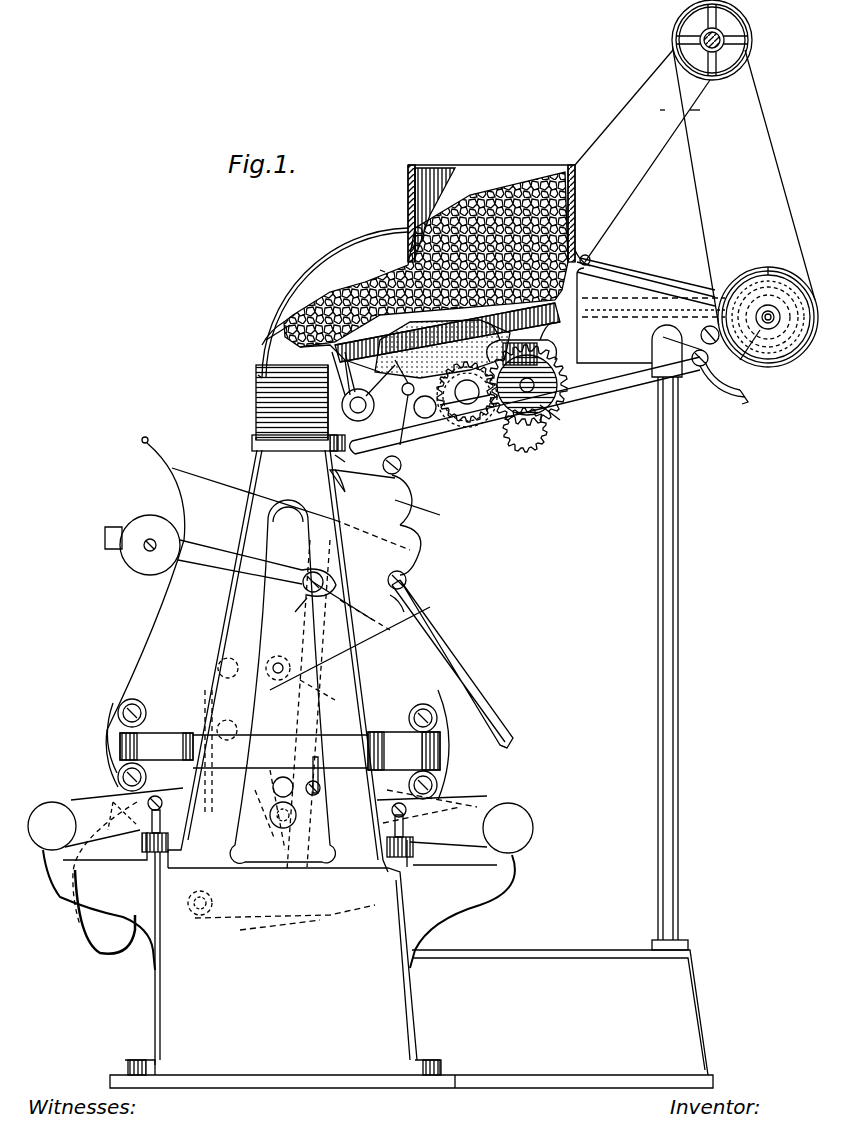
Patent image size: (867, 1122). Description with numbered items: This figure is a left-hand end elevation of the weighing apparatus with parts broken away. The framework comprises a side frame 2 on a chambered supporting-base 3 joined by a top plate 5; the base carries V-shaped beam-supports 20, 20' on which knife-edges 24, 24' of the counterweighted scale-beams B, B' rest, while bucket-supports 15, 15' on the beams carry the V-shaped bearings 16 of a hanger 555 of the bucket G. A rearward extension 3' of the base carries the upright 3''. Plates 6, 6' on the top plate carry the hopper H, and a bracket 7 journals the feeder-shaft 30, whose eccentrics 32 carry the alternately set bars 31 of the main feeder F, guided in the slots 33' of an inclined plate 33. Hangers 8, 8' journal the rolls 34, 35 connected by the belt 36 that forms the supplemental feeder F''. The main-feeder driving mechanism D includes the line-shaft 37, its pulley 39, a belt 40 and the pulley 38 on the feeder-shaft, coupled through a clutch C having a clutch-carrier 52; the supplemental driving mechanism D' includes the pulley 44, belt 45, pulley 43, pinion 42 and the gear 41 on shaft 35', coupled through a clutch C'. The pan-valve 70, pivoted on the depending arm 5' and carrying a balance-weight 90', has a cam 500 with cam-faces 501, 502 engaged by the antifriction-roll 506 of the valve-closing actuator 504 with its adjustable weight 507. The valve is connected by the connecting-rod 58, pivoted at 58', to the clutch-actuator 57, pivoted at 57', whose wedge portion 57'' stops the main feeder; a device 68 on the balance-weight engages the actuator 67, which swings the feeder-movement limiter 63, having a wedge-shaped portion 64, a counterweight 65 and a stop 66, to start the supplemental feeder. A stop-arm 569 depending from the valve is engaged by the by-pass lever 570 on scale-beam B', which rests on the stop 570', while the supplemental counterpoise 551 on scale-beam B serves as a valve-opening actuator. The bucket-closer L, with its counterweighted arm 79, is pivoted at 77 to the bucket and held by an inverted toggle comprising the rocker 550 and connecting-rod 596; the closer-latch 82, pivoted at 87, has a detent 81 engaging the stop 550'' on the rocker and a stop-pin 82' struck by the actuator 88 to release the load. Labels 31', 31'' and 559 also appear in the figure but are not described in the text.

The line-shaft 37 is at (735, 22).
The pulley or band-wheel 44 is at (675, 50).
The belt 45 is at (648, 172).
The pulley or belt-wheel 39 is at (745, 60).
The belt 40 is at (705, 152).
The driving mechanism for the main feeder D is at (719, 163).
The driving mechanism for the supplemental feeder D' is at (652, 123).
The supply device or hopper H is at (490, 165).
The rearwardly-extending plate 6' is at (335, 296).
The main feeder F is at (376, 257).
The rearwardly-extending plate 6 is at (265, 344).
The bars 31 is at (517, 311).
The actuator 67 is at (320, 358).
The wedge-shaped portion 64 is at (439, 349).
The supplemental-feeder supporting-roll 34 is at (258, 383).
The top plate 5 is at (280, 402).
The device 68 is at (298, 442).
The inclined plate 33 is at (587, 245).
The guide-slots 33' is at (651, 315).
The bracket 7 is at (628, 292).
The chute bottom 31' is at (655, 290).
The clutch C is at (768, 330).
The eccentrics 32 is at (760, 300).
The gear rim 31'' is at (768, 299).
The clutch-carrier 52 is at (790, 268).
The feeder-shaft 30 is at (770, 325).
The pulley or belt-wheel 38 is at (785, 375).
The upright or rod 3'' is at (679, 637).
The connecting-rod 58 is at (525, 405).
The pivot 58' is at (547, 416).
The clutch-actuator 57 is at (676, 338).
The pivot 57' is at (722, 384).
The wedge portion 57'' is at (743, 406).
The gear F'' is at (527, 402).
The supplemental-feeder supporting-roll 35 is at (544, 375).
The gear 41 is at (565, 417).
The shaft 35' is at (538, 430).
The clutch C' is at (473, 408).
The pinion 42 is at (468, 405).
The pulley or belt-wheel 43 is at (462, 400).
The belt 36 is at (462, 430).
The counterweight 65 is at (425, 418).
The stop 66 is at (414, 402).
The feeder-movement limiter 63 is at (369, 390).
The bracket or hanger 8 is at (342, 371).
The bracket or hanger 8' is at (526, 343).
The side frame or upright 2 is at (235, 602).
The balance-weight 90' is at (312, 461).
The bracket or arm 5' is at (347, 468).
The valve 70 is at (350, 488).
The cam 500 is at (418, 505).
The cam-face 502 is at (438, 512).
The cam-face 501 is at (425, 545).
The antifriction-roll 506 is at (408, 578).
The stop-arm 569 is at (445, 580).
The connecting-rod 596 is at (406, 620).
The bucket G is at (451, 709).
The valve-closing actuator 504 is at (218, 560).
The weight 507 is at (152, 563).
The pivot 559 is at (318, 570).
The rocker 550 is at (288, 617).
The counterweighted arm 79 is at (114, 932).
The hanger 555 is at (152, 740).
The pivot or knife-edge 24 is at (151, 752).
The scale-beam B is at (105, 879).
The beam-support 20 is at (164, 824).
The stop 550'' is at (408, 745).
The pivot or knife-edge 24' is at (441, 751).
The scale-beam B' is at (455, 882).
The supplemental counterpoise 551 is at (470, 810).
The beam-support 20' is at (420, 830).
The supporting-base 3 is at (411, 970).
The rearward extension 3' is at (560, 1001).
The stop 570 is at (267, 705).
The stop 570' is at (280, 817).
The pivot 77 is at (214, 903).
The bucket-closer L is at (285, 944).
The pivot 87 is at (258, 658).
The closer-latch 82 is at (283, 659).
The stop-pin 82' is at (350, 648).
The actuator 88 is at (378, 618).
The detent or stop 81 is at (345, 700).
The V-shaped bearings 16 is at (255, 780).
The bucket-support 15 is at (279, 801).
The bucket-support 15' is at (340, 798).